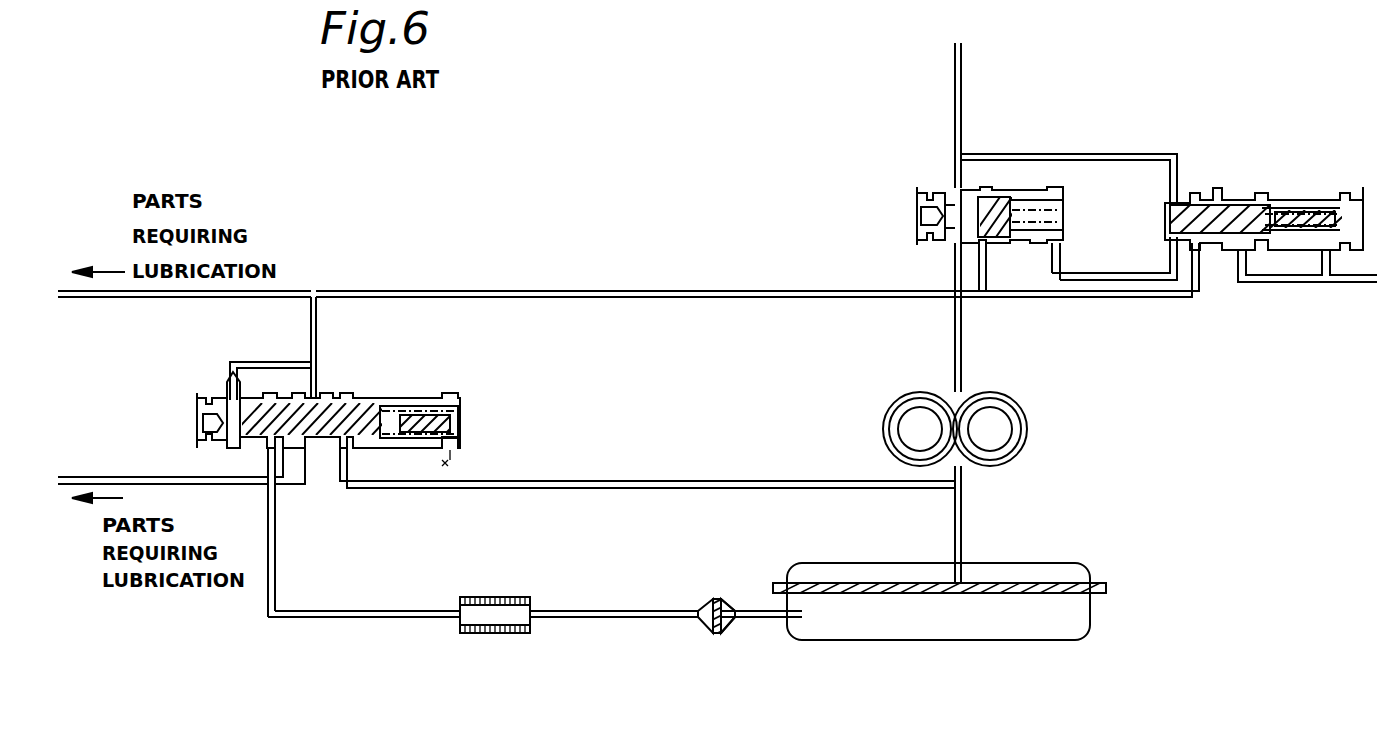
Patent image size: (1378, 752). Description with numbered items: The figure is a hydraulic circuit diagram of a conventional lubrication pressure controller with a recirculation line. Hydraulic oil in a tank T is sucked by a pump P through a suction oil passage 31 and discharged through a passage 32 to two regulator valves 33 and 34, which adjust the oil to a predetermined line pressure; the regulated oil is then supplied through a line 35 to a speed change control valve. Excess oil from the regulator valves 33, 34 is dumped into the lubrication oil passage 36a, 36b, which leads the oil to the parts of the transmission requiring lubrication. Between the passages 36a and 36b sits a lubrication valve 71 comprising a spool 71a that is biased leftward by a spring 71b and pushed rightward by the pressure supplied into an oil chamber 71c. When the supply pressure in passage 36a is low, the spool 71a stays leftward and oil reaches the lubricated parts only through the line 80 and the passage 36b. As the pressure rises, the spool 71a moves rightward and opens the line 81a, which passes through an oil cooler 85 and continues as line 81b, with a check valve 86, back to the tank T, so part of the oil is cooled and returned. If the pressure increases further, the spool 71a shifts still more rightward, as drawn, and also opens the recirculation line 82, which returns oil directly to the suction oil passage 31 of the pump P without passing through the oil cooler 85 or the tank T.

The suction oil passage 31 is at (963, 523).
The discharge pipe 32 is at (963, 345).
The regulator valve 33 is at (912, 175).
The regulator valve 34 is at (1263, 175).
The line 35 is at (962, 64).
The lubrication oil passage 36a is at (760, 291).
The lubrication oil passage 36b is at (294, 294).
The lubrication valve 71 is at (354, 394).
The spool 71a is at (362, 403).
The spring 71b is at (460, 428).
The oil chamber 71c is at (233, 410).
The line 80 is at (100, 477).
The line 81a is at (277, 575).
The line 81b is at (582, 620).
The recirculation line 82 is at (648, 482).
The oil cooler 85 is at (517, 597).
The check valve 86 is at (720, 599).
The pump P is at (1027, 412).
The tank T is at (1076, 575).